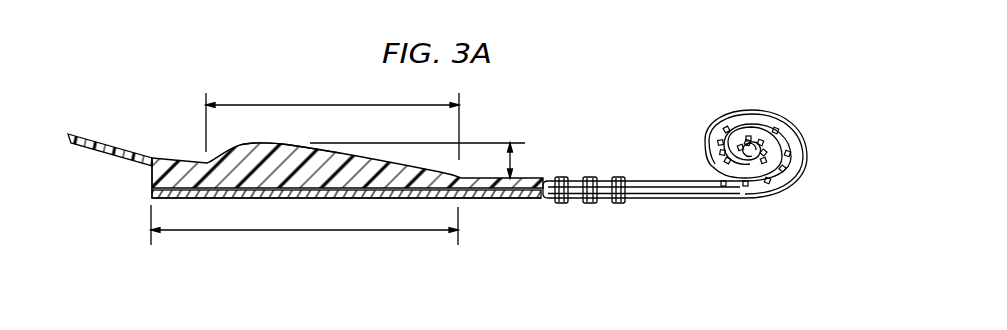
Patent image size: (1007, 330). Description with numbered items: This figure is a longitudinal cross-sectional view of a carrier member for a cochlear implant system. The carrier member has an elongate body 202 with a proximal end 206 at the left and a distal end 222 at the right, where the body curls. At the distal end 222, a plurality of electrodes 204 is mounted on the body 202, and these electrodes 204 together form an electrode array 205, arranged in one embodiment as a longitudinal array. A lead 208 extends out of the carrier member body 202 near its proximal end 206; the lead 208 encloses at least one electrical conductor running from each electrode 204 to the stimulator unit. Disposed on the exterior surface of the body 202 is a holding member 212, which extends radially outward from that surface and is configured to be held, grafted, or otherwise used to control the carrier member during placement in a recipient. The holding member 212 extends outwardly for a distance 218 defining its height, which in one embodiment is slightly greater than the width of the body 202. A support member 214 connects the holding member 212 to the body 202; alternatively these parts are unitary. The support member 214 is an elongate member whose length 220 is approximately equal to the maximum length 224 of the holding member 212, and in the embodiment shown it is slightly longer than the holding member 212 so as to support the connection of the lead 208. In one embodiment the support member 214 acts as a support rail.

The elongate body 202 is at (527, 202).
The electrode 204 is at (773, 128).
The electrode array 205 is at (811, 168).
The proximal end 206 is at (135, 191).
The lead 208 is at (122, 145).
The holding member 212 is at (262, 143).
The support member 214 is at (147, 167).
The height of holding member 218 is at (513, 162).
The length of support member 220 is at (293, 230).
The distal end 222 is at (771, 208).
The maximum length of holding member 224 is at (315, 105).